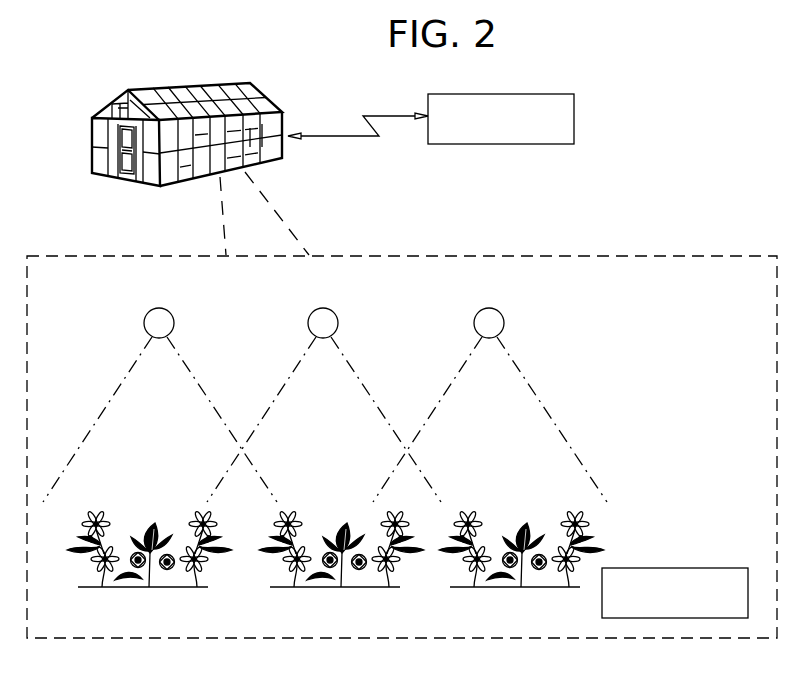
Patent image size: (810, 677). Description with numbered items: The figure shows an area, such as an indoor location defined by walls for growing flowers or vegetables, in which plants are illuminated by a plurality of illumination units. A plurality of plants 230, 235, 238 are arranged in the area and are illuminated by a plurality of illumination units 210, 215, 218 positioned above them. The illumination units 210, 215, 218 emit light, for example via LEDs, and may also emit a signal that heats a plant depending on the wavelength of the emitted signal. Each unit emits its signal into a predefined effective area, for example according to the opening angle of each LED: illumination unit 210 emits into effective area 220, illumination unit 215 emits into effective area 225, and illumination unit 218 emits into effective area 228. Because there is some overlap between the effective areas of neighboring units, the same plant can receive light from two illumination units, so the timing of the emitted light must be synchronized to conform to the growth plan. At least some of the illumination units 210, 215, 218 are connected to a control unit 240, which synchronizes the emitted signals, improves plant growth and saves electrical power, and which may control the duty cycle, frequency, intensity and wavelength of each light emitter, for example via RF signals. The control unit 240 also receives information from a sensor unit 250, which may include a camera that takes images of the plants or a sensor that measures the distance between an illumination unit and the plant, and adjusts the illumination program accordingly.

The illumination unit 210 is at (144, 315).
The illumination unit 215 is at (308, 315).
The illumination unit 218 is at (474, 315).
The effective area 220 is at (182, 403).
The effective area 225 is at (303, 404).
The effective area 228 is at (470, 404).
The plant 230 is at (125, 588).
The plant 235 is at (285, 588).
The plant 238 is at (467, 588).
The control unit 240 is at (575, 107).
The sensor unit 250 is at (679, 568).